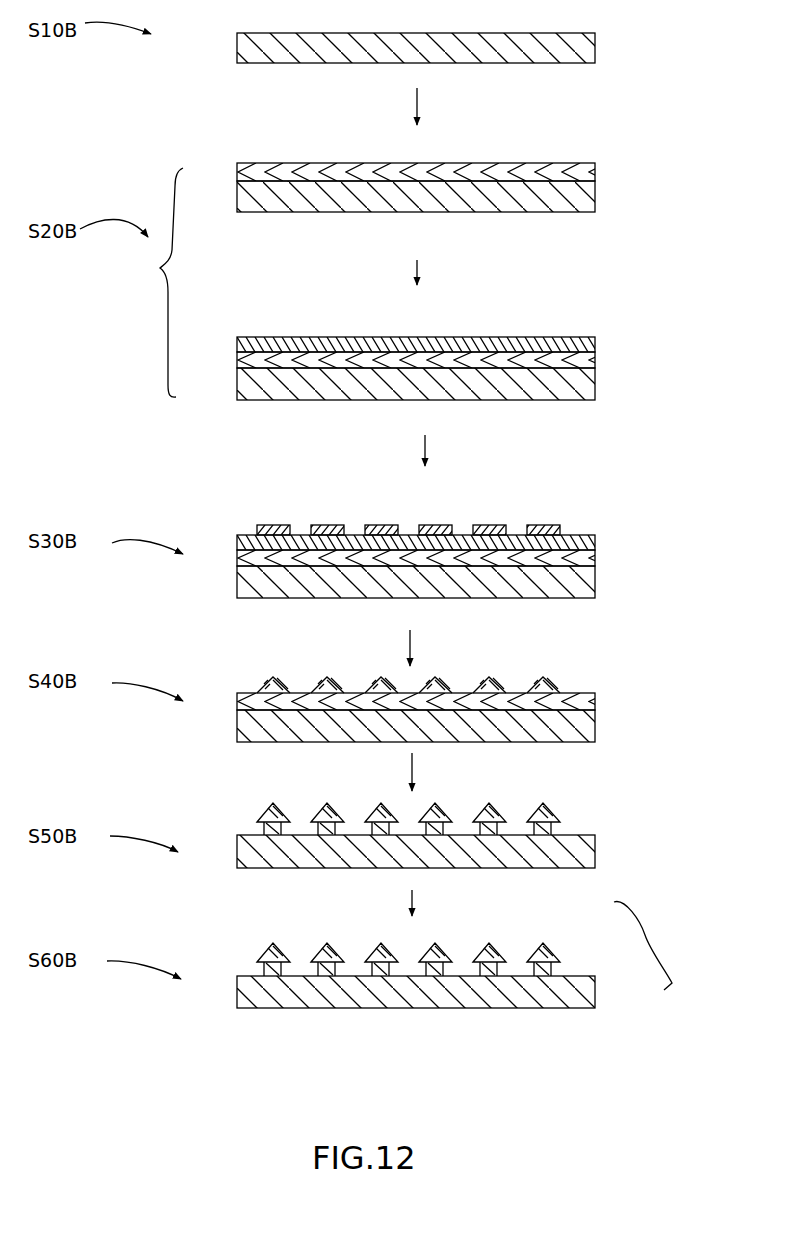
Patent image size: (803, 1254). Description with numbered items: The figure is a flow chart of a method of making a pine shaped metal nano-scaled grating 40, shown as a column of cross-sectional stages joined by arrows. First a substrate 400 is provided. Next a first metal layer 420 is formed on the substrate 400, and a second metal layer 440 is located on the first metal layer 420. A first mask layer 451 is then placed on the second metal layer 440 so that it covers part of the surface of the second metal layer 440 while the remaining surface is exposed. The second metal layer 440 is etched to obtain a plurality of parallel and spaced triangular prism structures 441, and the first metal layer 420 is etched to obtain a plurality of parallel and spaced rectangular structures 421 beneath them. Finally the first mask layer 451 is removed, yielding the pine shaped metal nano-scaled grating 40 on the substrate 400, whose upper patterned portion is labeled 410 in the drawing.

The substrate 400 is at (573, 48).
The first metal layer 420 is at (577, 170).
The second metal layer 440 is at (553, 343).
The first mask layer 451 is at (272, 527).
The triangular prism structures 441 is at (548, 681).
The rectangular structures 421 is at (580, 826).
The microstructure 410 is at (658, 946).
The pine shaped metal nano-scaled grating 40 is at (385, 1028).